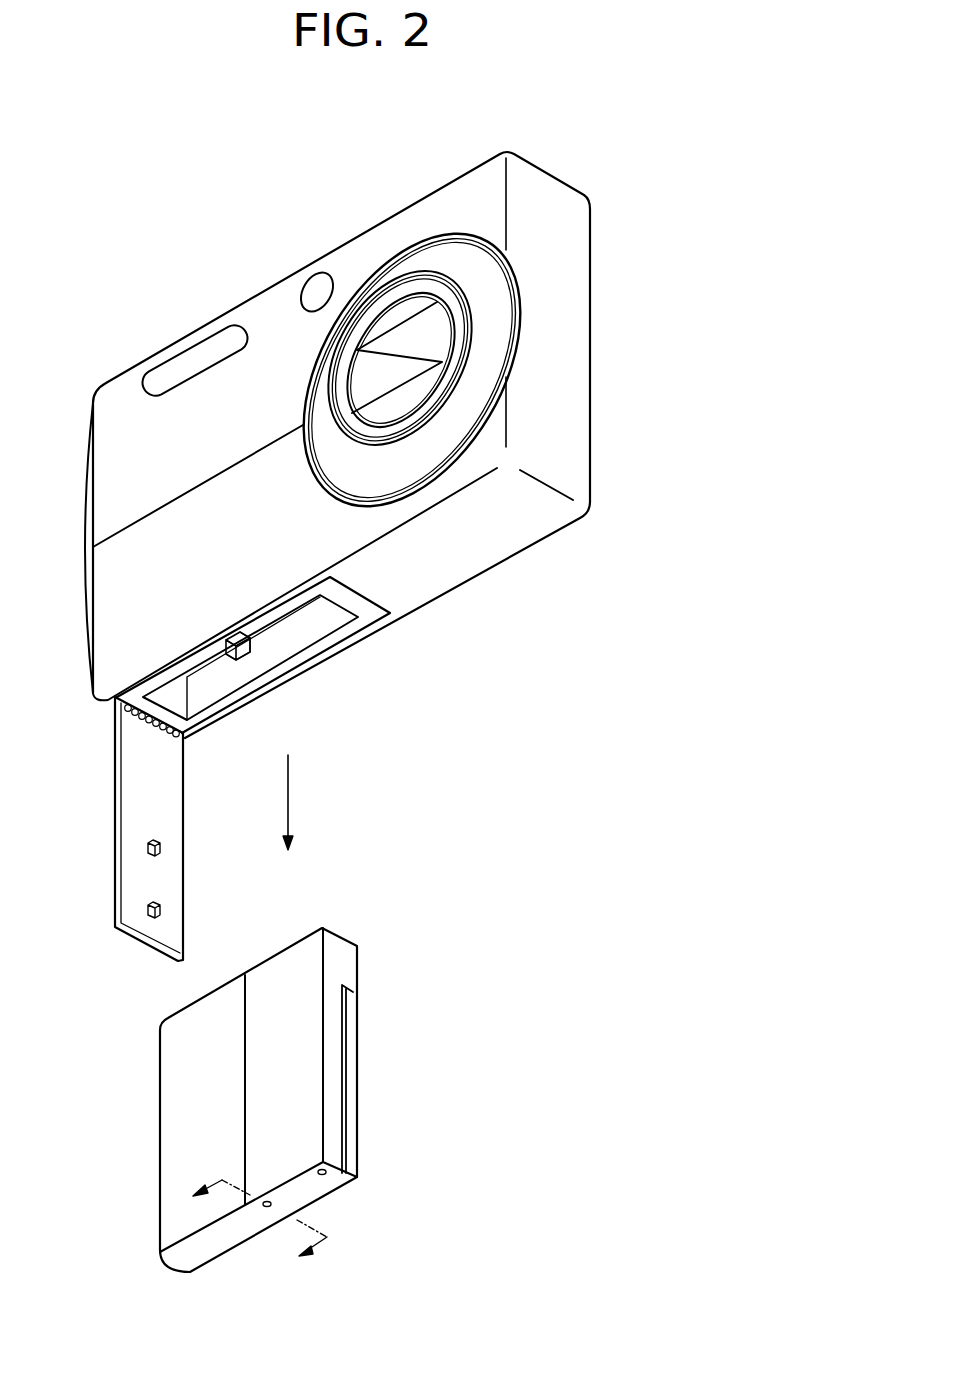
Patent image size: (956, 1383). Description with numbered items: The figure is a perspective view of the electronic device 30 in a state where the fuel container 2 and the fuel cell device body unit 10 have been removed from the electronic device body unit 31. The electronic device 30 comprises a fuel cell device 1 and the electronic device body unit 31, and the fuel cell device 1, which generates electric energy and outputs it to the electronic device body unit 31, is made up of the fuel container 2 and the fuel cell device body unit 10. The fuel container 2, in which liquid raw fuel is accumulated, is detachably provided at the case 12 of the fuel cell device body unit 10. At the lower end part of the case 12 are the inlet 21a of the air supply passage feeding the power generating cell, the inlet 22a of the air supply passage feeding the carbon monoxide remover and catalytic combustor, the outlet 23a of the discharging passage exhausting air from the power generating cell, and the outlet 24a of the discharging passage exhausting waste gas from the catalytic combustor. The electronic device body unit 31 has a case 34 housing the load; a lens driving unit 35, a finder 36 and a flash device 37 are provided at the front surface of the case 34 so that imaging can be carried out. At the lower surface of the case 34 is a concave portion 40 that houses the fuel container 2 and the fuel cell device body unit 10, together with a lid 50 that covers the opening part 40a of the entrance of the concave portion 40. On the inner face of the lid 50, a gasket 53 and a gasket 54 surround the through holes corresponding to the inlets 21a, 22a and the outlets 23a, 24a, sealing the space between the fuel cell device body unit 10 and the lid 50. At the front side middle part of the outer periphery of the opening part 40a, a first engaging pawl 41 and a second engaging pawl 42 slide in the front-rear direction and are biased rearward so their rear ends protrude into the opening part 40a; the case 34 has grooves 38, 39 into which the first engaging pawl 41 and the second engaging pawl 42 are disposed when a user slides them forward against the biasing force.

The electronic device 30 is at (143, 200).
The electronic device body unit 31 is at (403, 445).
The case 34 is at (593, 230).
The lens driving unit 35 is at (488, 333).
The finder 36 is at (313, 273).
The flash device 37 is at (193, 343).
The groove 38 is at (232, 632).
The groove 39 is at (223, 636).
The concave portion 40 is at (294, 632).
The opening part 40a is at (357, 612).
The first engaging pawl 41 is at (245, 637).
The second engaging pawl 42 is at (223, 653).
The lid 50 is at (138, 780).
The gasket 53 is at (150, 843).
The gasket 54 is at (150, 905).
The fuel cell device 1 is at (386, 950).
The fuel container 2 is at (157, 1082).
The fuel cell device body unit 10 is at (397, 1079).
The case 12 is at (330, 1067).
The inlet 21a is at (226, 1266).
The inlet 22a is at (267, 1207).
The outlet 23a is at (394, 1220).
The outlet 24a is at (322, 1175).